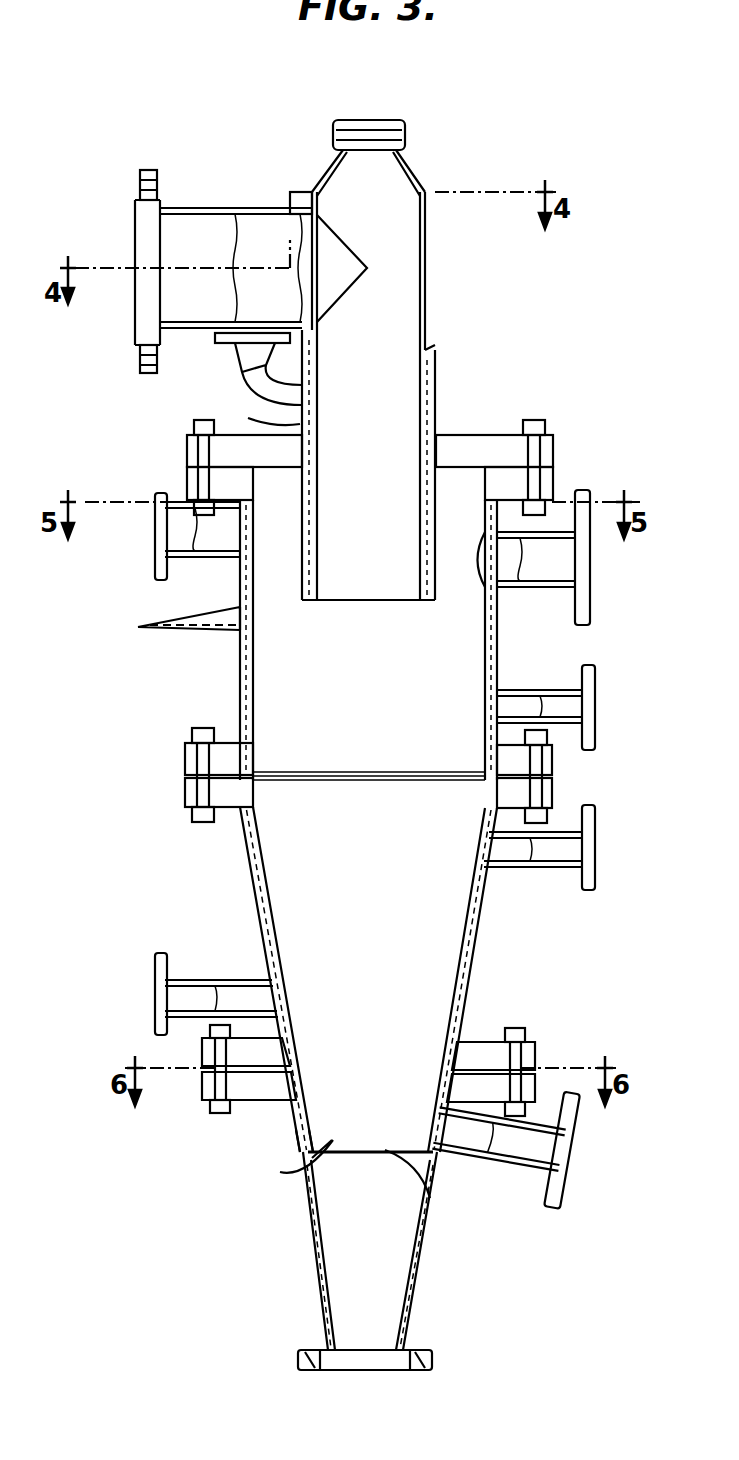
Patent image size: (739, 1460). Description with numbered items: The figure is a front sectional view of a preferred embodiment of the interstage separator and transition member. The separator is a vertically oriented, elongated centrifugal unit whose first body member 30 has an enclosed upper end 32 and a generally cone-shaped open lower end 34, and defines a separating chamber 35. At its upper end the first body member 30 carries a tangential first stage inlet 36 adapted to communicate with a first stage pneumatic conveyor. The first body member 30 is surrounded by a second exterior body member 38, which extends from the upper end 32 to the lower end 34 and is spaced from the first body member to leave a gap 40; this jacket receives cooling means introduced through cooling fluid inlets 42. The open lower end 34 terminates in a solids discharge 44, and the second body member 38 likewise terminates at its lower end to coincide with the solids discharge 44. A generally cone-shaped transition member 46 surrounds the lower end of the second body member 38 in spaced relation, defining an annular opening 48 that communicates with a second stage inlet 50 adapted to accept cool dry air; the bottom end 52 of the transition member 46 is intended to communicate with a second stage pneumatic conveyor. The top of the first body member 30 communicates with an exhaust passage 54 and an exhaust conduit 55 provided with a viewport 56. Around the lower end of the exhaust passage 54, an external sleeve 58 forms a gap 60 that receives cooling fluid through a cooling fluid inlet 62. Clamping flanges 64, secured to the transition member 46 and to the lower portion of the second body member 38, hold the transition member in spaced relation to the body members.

The first body member 30 is at (497, 652).
The enclosed upper end 32 is at (460, 487).
The open lower end 34 is at (312, 1158).
The separating chamber 35 is at (262, 662).
The tangential first stage inlet 36 is at (565, 567).
The second exterior body member 38 is at (250, 842).
The gap 40 is at (262, 880).
The cooling fluid inlets 42 is at (162, 985).
The solids discharge 44 is at (426, 1192).
The transition member 46 is at (318, 1247).
The annular opening 48 is at (298, 1118).
The second stage inlet 50 is at (545, 1160).
The bottom end 52 is at (405, 1372).
The exhaust passage 54 is at (408, 282).
The exhaust conduit 55 is at (195, 235).
The viewport 56 is at (390, 120).
The external sleeve 58 is at (256, 409).
The gap 60 is at (432, 352).
The cooling fluid inlet 62 is at (232, 378).
The clamping flanges 64 is at (206, 1093).